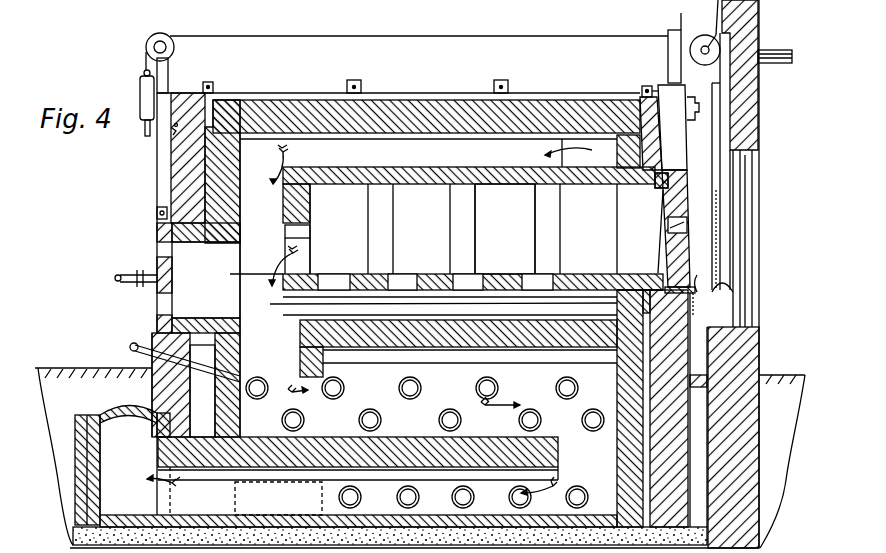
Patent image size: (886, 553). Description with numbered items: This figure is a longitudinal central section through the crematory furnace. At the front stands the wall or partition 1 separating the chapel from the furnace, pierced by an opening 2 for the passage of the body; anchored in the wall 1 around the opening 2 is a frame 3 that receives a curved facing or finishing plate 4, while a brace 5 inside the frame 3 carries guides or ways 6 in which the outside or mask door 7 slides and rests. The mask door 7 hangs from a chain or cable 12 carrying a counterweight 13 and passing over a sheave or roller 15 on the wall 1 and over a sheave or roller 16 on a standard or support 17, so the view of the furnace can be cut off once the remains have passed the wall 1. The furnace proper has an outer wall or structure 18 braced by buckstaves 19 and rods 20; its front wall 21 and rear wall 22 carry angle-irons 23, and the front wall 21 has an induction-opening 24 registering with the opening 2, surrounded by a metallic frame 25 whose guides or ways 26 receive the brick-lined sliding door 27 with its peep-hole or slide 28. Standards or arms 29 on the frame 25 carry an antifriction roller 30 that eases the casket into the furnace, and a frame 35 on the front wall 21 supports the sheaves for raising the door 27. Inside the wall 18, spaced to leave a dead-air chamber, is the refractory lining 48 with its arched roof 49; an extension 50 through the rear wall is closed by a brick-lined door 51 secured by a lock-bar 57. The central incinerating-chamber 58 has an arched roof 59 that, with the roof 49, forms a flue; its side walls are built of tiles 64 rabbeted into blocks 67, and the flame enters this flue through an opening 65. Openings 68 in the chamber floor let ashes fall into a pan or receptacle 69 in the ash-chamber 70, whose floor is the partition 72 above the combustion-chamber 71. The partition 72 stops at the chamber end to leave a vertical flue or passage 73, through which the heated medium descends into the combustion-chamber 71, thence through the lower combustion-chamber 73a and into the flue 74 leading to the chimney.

The wall or partition 1 is at (758, 112).
The opening 2 is at (748, 238).
The frame 3 is at (746, 241).
The facing or finishing plate 4 is at (734, 164).
The brace 5 is at (731, 293).
The guides or ways 6 is at (712, 118).
The outside or mask door 7 is at (716, 206).
The chain or cable 12 is at (419, 28).
The counterweight 13 is at (140, 106).
The sheave or roller 15 is at (705, 32).
The sheave or roller 16 is at (160, 37).
The standard or support 17 is at (171, 75).
The outer wall or structure 18 is at (186, 173).
The buckstaves 19 is at (214, 87).
The rods 20 is at (209, 82).
The front wall 21 is at (672, 351).
The rear wall 22 is at (185, 362).
The angle-irons 23 is at (171, 132).
The induction-opening 24 is at (640, 276).
The metallic frame 25 is at (661, 242).
The guides or ways 26 is at (662, 147).
The brick-lined sliding door 27 is at (690, 196).
The peep-hole or slide 28 is at (688, 226).
The standards or arms 29 is at (697, 300).
The antifriction device or roller 30 is at (698, 275).
The frame 35 is at (666, 48).
The lining 48 is at (240, 183).
The arched roof 49 is at (416, 133).
The extension 50 is at (206, 278).
The brick-lined door 51 is at (173, 272).
The lock-bar 57 is at (140, 286).
The incinerating-chamber 58 is at (532, 190).
The arched roof 59 is at (481, 170).
The tiles 64 is at (463, 229).
The opening 65 is at (570, 150).
The blocks 67 is at (463, 229).
The openings 68 is at (446, 282).
The pan or receptacle 69 is at (300, 317).
The ash-chamber 70 is at (435, 303).
The combustion-chamber 71 is at (425, 442).
The wall or partition 72 is at (298, 338).
The vertical flue or passage 73 is at (385, 324).
The lower combustion-chamber 73a is at (521, 487).
The flue 74 is at (414, 476).